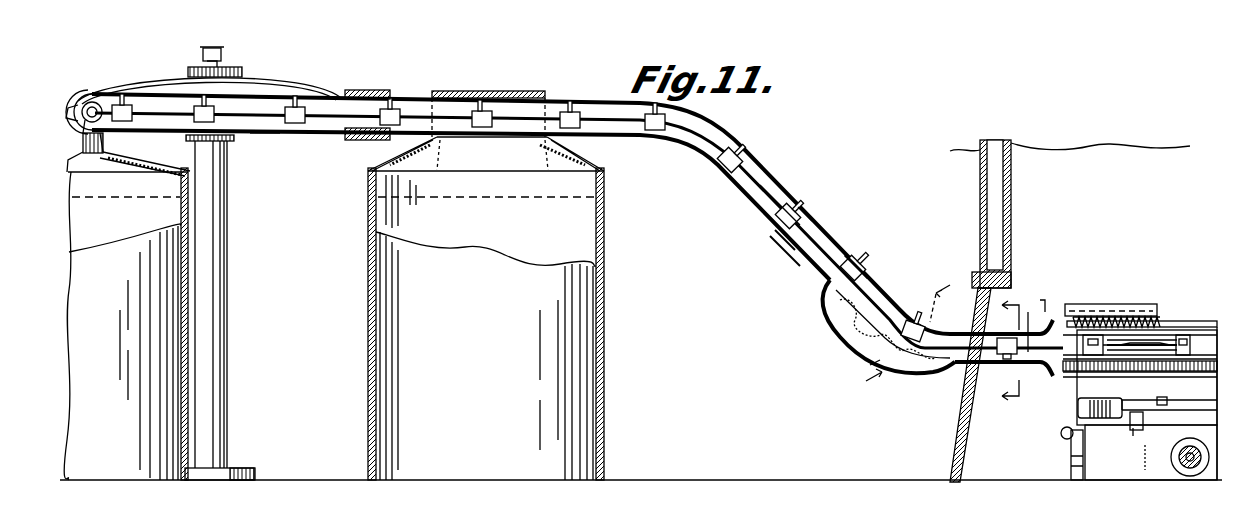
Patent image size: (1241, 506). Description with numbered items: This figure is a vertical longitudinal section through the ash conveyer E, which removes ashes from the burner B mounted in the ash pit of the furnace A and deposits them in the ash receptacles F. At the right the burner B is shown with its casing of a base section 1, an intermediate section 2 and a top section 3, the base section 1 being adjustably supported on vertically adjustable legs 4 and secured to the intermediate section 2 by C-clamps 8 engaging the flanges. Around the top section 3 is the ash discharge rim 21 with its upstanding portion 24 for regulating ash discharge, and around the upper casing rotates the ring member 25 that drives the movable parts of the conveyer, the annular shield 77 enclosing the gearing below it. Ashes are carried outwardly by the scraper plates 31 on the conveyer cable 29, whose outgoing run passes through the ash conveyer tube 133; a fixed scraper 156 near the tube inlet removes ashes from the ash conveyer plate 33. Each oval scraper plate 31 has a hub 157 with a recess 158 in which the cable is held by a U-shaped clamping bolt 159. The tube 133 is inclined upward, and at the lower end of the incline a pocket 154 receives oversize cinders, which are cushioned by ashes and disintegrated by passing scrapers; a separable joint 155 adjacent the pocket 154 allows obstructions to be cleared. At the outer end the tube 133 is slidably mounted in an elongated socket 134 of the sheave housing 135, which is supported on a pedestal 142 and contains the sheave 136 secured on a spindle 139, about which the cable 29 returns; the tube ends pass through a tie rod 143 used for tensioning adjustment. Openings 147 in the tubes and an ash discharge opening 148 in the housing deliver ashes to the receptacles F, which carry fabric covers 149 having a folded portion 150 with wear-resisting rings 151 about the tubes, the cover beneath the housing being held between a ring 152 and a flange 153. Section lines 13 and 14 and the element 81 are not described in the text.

The base section 1 is at (1126, 470).
The intermediate section 2 is at (1078, 406).
The top section 3 is at (1162, 321).
The vertically adjustable legs 4 is at (1072, 478).
The C-clamps 8 is at (1134, 431).
The section line arrows 13 is at (1007, 350).
The section line arrows 14 is at (902, 331).
The ash discharge rim 21 is at (1213, 312).
The upstanding portion 24 is at (1068, 304).
The ring member 25 is at (1112, 317).
The conveyer cable 29 is at (352, 113).
The scraper plates 31 is at (92, 92).
The ash conveyer plate 33 is at (1150, 350).
The annular shield 77 is at (1082, 387).
The hand wheel 81 is at (1192, 478).
The ash conveyer tube 133 is at (742, 142).
The elongated socket 134 is at (330, 136).
The sheave housing 135 is at (266, 136).
The sheave 136 is at (112, 97).
The spindle 139 is at (222, 64).
The pedestal 142 is at (226, 276).
The tie rod 143 is at (380, 92).
The openings 147 is at (480, 137).
The ash discharge opening 148 is at (96, 140).
The fabric covers 149 is at (142, 151).
The folded portion 150 is at (505, 92).
The wear-resisting rings 151 is at (440, 142).
The ring 152 is at (108, 139).
The flange 153 is at (102, 152).
The pocket 154 is at (836, 334).
The separable joint 155 is at (855, 256).
The fixed scraper 156 is at (1052, 306).
The hub 157 is at (806, 216).
The recess 158 is at (792, 238).
The U-shaped clamping bolt 159 is at (780, 229).
The furnace A is at (982, 150).
The burner B is at (1122, 357).
The ash conveyer E is at (774, 182).
The ash receptacles F is at (334, 324).